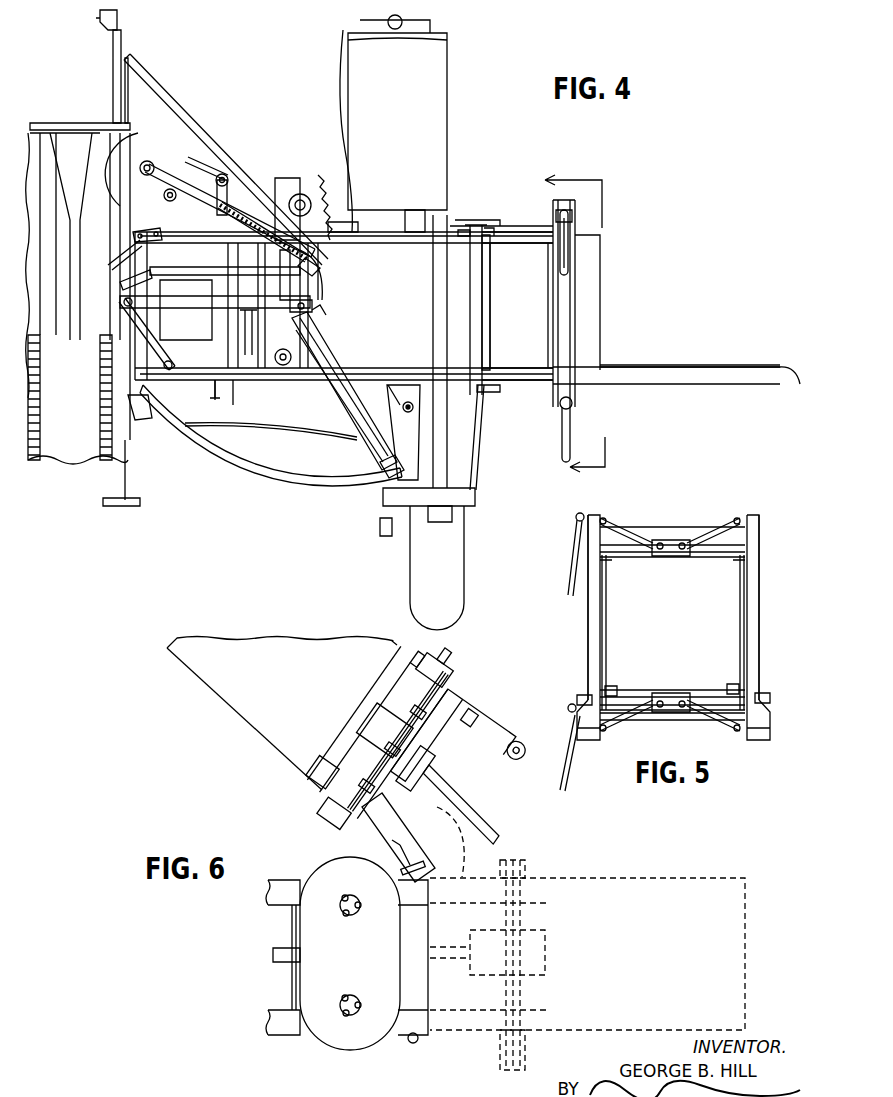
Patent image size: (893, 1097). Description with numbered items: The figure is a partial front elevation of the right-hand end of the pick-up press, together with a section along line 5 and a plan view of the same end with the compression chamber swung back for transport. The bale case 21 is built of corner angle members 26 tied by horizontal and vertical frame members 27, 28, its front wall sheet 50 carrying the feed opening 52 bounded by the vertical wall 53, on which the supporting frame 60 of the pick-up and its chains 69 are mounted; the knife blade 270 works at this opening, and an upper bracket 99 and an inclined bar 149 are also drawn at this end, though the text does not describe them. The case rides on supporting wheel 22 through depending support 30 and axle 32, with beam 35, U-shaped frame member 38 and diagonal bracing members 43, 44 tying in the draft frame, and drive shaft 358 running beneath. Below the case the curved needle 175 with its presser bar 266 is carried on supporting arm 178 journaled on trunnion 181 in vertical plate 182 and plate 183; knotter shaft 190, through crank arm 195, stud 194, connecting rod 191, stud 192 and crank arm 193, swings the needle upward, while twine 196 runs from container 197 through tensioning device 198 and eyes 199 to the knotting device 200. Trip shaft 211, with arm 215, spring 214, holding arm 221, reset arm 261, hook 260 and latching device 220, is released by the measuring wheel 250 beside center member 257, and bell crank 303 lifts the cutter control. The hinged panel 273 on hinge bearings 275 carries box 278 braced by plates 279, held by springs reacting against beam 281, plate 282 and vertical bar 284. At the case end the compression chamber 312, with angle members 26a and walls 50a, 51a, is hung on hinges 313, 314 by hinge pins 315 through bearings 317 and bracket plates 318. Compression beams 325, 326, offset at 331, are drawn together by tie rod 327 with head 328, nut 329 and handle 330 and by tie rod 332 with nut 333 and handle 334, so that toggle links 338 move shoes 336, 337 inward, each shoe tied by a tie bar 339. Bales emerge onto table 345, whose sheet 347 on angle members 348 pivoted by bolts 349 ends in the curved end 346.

In FIG. 4, the section line 5— 5 is at (574, 318).
In FIG. 4, the bale case 21 is at (368, 310).
In FIG. 6, the bale case 21 is at (285, 872).
In FIG. 4, the supporting wheel 22 is at (455, 600).
In FIG. 4, the structural angle member 26 is at (376, 243).
In FIG. 6, the structural angle member 26 is at (275, 895).
In FIG. 4, the structural angle member of compression case 26a is at (505, 246).
In FIG. 5, the structural angle member of compression case 26a is at (612, 557).
In FIG. 6, the structural angle member of compression case 26a is at (458, 706).
In FIG. 4, the horizontal frame member 27 is at (412, 243).
In FIG. 4, the vertical frame member 28 is at (278, 284).
In FIG. 4, the depending support 30 is at (476, 456).
In FIG. 4, the axle 32 is at (398, 522).
In FIG. 4, the structural beam 35 is at (446, 522).
In FIG. 4, the U-shaped frame member 38 is at (475, 494).
In FIG. 4, the diagonal bracing member 43 is at (455, 279).
In FIG. 4, the diagonal bracing member 44 is at (172, 361).
In FIG. 4, the front wall sheet 50 is at (405, 368).
In FIG. 4, the front side wall of compression chamber 50a is at (494, 317).
In FIG. 5, the front side wall of compression chamber 50a is at (606, 618).
In FIG. 5, the rear side wall of compression chamber 51a is at (740, 620).
In FIG. 4, the feed opening 52 is at (74, 344).
In FIG. 4, the vertical wall 53 is at (128, 82).
In FIG. 4, the supporting frame 60 is at (144, 412).
In FIG. 4, the chain 69 is at (104, 458).
In FIG. 4, the bracket 99 is at (117, 18).
In FIG. 4, the bar 149 is at (173, 117).
In FIG. 4, the curved needle 175 is at (262, 472).
In FIG. 4, the supporting arm 178 is at (347, 444).
In FIG. 4, the trunnion 181 is at (312, 311).
In FIG. 4, the vertical plate 182 is at (312, 380).
In FIG. 4, the plate 183 is at (322, 288).
In FIG. 4, the knotter shaft 190 is at (140, 172).
In FIG. 4, the connecting rod 191 is at (248, 326).
In FIG. 4, the stud 192 is at (280, 365).
In FIG. 4, the crank arm 193 is at (290, 362).
In FIG. 4, the stud 194 is at (133, 236).
In FIG. 4, the crank arm 195 is at (163, 197).
In FIG. 4, the twine 196 is at (345, 368).
In FIG. 4, the twine container 197 is at (440, 85).
In FIG. 6, the twine container 197 is at (345, 1042).
In FIG. 4, the tensioning device 198 is at (352, 220).
In FIG. 4, the eye 199 is at (324, 315).
In FIG. 4, the knotting device 200 is at (191, 151).
In FIG. 4, the trip shaft 211 is at (240, 165).
In FIG. 4, the tension spring 214 is at (262, 246).
In FIG. 4, the arm 215 is at (217, 198).
In FIG. 4, the latching device 220 is at (324, 172).
In FIG. 4, the holding arm 221 is at (255, 178).
In FIG. 4, the measuring wheel 250 is at (348, 176).
In FIG. 6, the center structural member 257 is at (292, 958).
In FIG. 4, the hook 260 is at (289, 170).
In FIG. 4, the reset arm 261 is at (226, 165).
In FIG. 4, the presser bar 266 is at (293, 426).
In FIG. 4, the knife blade 270 is at (57, 270).
In FIG. 4, the hinged panel 273 is at (167, 332).
In FIG. 4, the hinge bearing 275 is at (212, 384).
In FIG. 4, the tubular box 278 is at (130, 280).
In FIG. 4, the bracing plate 279 is at (205, 276).
In FIG. 4, the horizontal beam 281 is at (126, 306).
In FIG. 4, the horizontal plate 282 is at (310, 270).
In FIG. 4, the vertical bar 284 is at (135, 297).
In FIG. 4, the bell crank 303 is at (118, 258).
In FIG. 4, the compression chamber 312 is at (610, 231).
In FIG. 5, the compression chamber 312 is at (654, 516).
In FIG. 6, the compression chamber 312 is at (292, 786).
In FIG. 6, the hinge 313 is at (387, 865).
In FIG. 4, the hinge 314 is at (482, 232).
In FIG. 6, the hinge 314 is at (414, 1054).
In FIG. 4, the hinge pin 315 is at (462, 228).
In FIG. 6, the hinge pin 315 is at (420, 866).
In FIG. 4, the tubular hinge bearing 317 is at (488, 300).
In FIG. 4, the bracket plate 318 is at (478, 236).
In FIG. 6, the bracket plate 318 is at (512, 758).
In FIG. 4, the compression beam 325 is at (585, 310).
In FIG. 5, the compression beam 325 is at (588, 618).
In FIG. 6, the compression beam 325 is at (458, 676).
In FIG. 5, the compression beam 326 is at (759, 602).
In FIG. 6, the compression beam 326 is at (320, 808).
In FIG. 5, the tie rod 327 is at (686, 527).
In FIG. 6, the tie rod 327 is at (372, 728).
In FIG. 6, the head 328 is at (328, 788).
In FIG. 4, the nut 329 is at (560, 216).
In FIG. 5, the nut 329 is at (577, 518).
In FIG. 6, the nut 329 is at (442, 662).
In FIG. 4, the handle 330 is at (568, 264).
In FIG. 5, the handle 330 is at (570, 578).
In FIG. 5, the offset lower end 331 is at (587, 740).
In FIG. 5, the tie rod 332 is at (672, 716).
In FIG. 4, the nut 333 is at (573, 404).
In FIG. 5, the nut 333 is at (568, 708).
In FIG. 6, the nut 333 is at (465, 660).
In FIG. 4, the handle 334 is at (570, 430).
In FIG. 5, the handle 334 is at (566, 785).
In FIG. 5, the compression shoe 336 is at (666, 556).
In FIG. 6, the compression shoe 336 is at (422, 764).
In FIG. 5, the compression shoe 337 is at (670, 693).
In FIG. 6, the compression shoe 337 is at (548, 940).
In FIG. 5, the toggle link 338 is at (615, 518).
In FIG. 6, the tie bar 339 is at (455, 808).
In FIG. 4, the table 345 is at (713, 354).
In FIG. 6, the table 345 is at (209, 701).
In FIG. 4, the downwardly curved end 346 is at (792, 367).
In FIG. 4, the horizontal sheet 347 is at (668, 366).
In FIG. 6, the horizontal sheet 347 is at (250, 700).
In FIG. 4, the structural angle member 348 is at (724, 384).
In FIG. 5, the structural angle member 348 is at (577, 699).
In FIG. 5, the bolt 349 is at (612, 686).
In FIG. 6, the bolt 349 is at (352, 826).
In FIG. 4, the drive shaft 358 is at (412, 410).